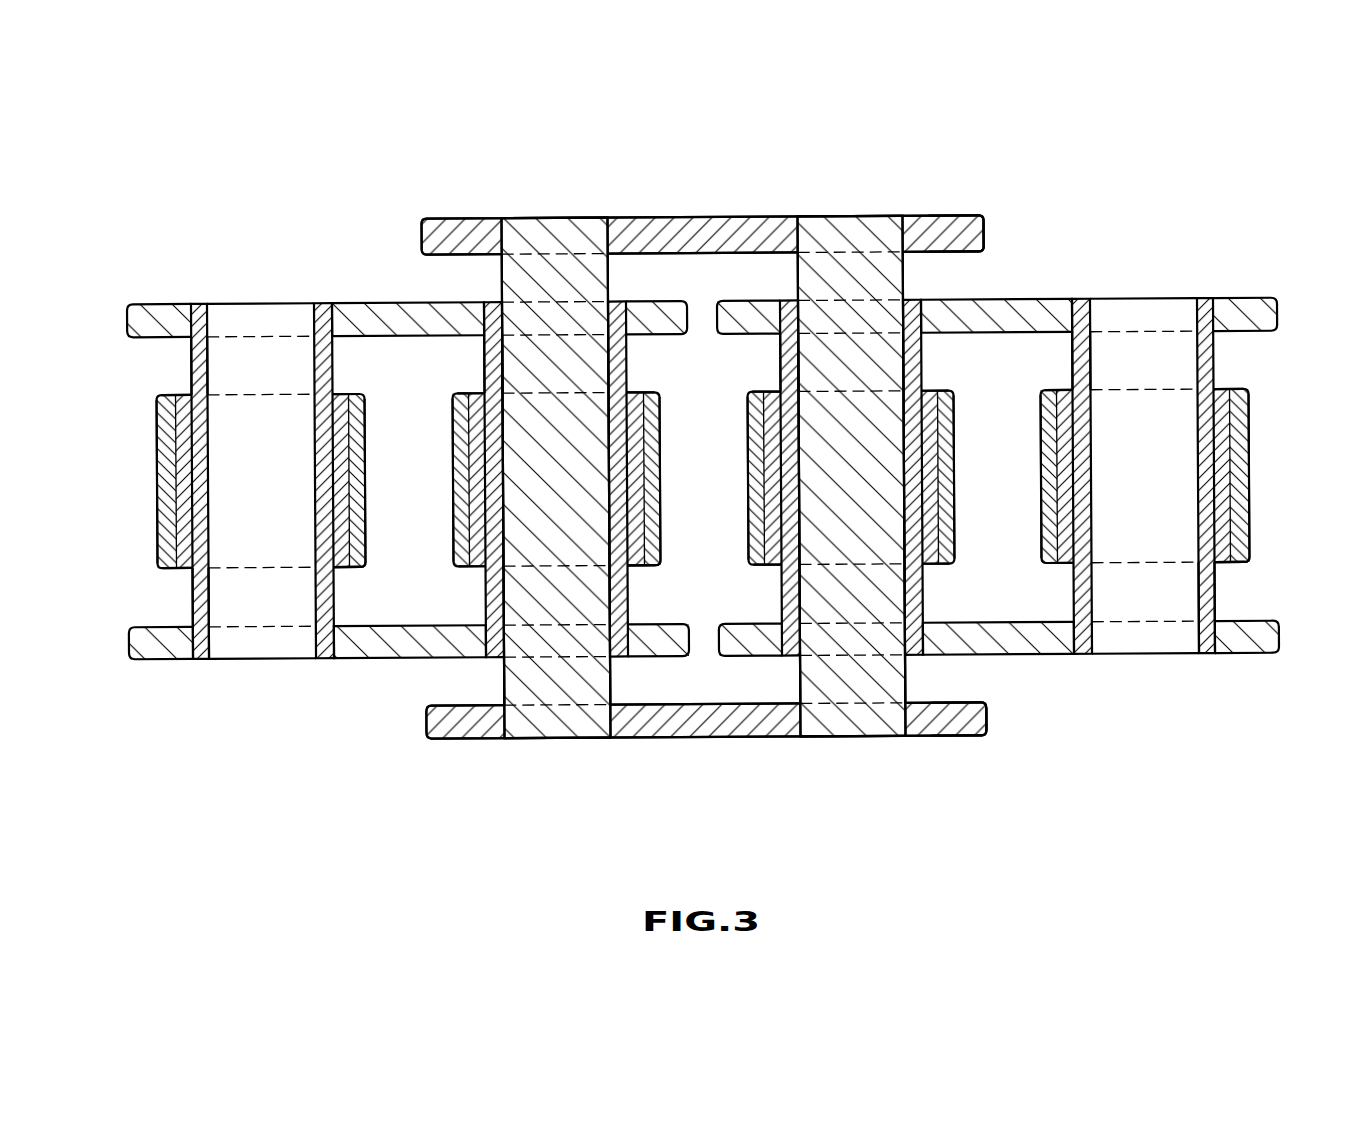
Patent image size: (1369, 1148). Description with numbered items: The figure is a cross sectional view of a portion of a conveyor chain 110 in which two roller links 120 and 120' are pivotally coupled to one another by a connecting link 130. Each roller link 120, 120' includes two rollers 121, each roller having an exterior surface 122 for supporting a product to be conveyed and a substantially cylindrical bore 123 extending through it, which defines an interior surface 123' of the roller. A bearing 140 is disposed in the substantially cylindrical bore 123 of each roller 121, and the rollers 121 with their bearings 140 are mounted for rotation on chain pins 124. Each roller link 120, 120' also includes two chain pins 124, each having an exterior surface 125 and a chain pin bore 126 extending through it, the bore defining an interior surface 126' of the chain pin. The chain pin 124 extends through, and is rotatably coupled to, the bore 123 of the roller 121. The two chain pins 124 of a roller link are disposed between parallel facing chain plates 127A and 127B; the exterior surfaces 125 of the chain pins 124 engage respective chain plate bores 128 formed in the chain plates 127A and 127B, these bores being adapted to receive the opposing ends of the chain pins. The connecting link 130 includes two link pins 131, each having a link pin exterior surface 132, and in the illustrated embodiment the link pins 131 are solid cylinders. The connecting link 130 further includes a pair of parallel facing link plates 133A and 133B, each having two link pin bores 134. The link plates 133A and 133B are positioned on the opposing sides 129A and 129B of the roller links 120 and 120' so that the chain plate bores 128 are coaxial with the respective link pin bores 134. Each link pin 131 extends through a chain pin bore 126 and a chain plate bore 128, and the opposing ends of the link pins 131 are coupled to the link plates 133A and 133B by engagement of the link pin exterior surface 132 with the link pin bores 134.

The conveyor chain 110 is at (683, 149).
The roller link 120 is at (272, 582).
The roller link 120' is at (1139, 574).
The roller 121 is at (170, 424).
The exterior surface 122 is at (165, 472).
The substantially cylindrical bore 123 is at (661, 397).
The interior surface 123' is at (664, 566).
The chain pin 124 is at (398, 293).
The exterior surface 125 is at (192, 347).
The chain pin bore 126 is at (712, 648).
The interior surface 126' is at (629, 460).
The chain plate 127A is at (153, 301).
The chain plate 127B is at (141, 659).
The chain plate bore 128 is at (318, 301).
The opposing side 129A is at (268, 282).
The opposing side 129B is at (247, 683).
The connecting link 130 is at (643, 797).
The link pin 131 is at (518, 681).
The link pin exterior surface 132 is at (613, 683).
The link plate 133A is at (967, 216).
The link plate 133B is at (967, 736).
The link pin bore 134 is at (505, 233).
The bearing 140 is at (348, 567).